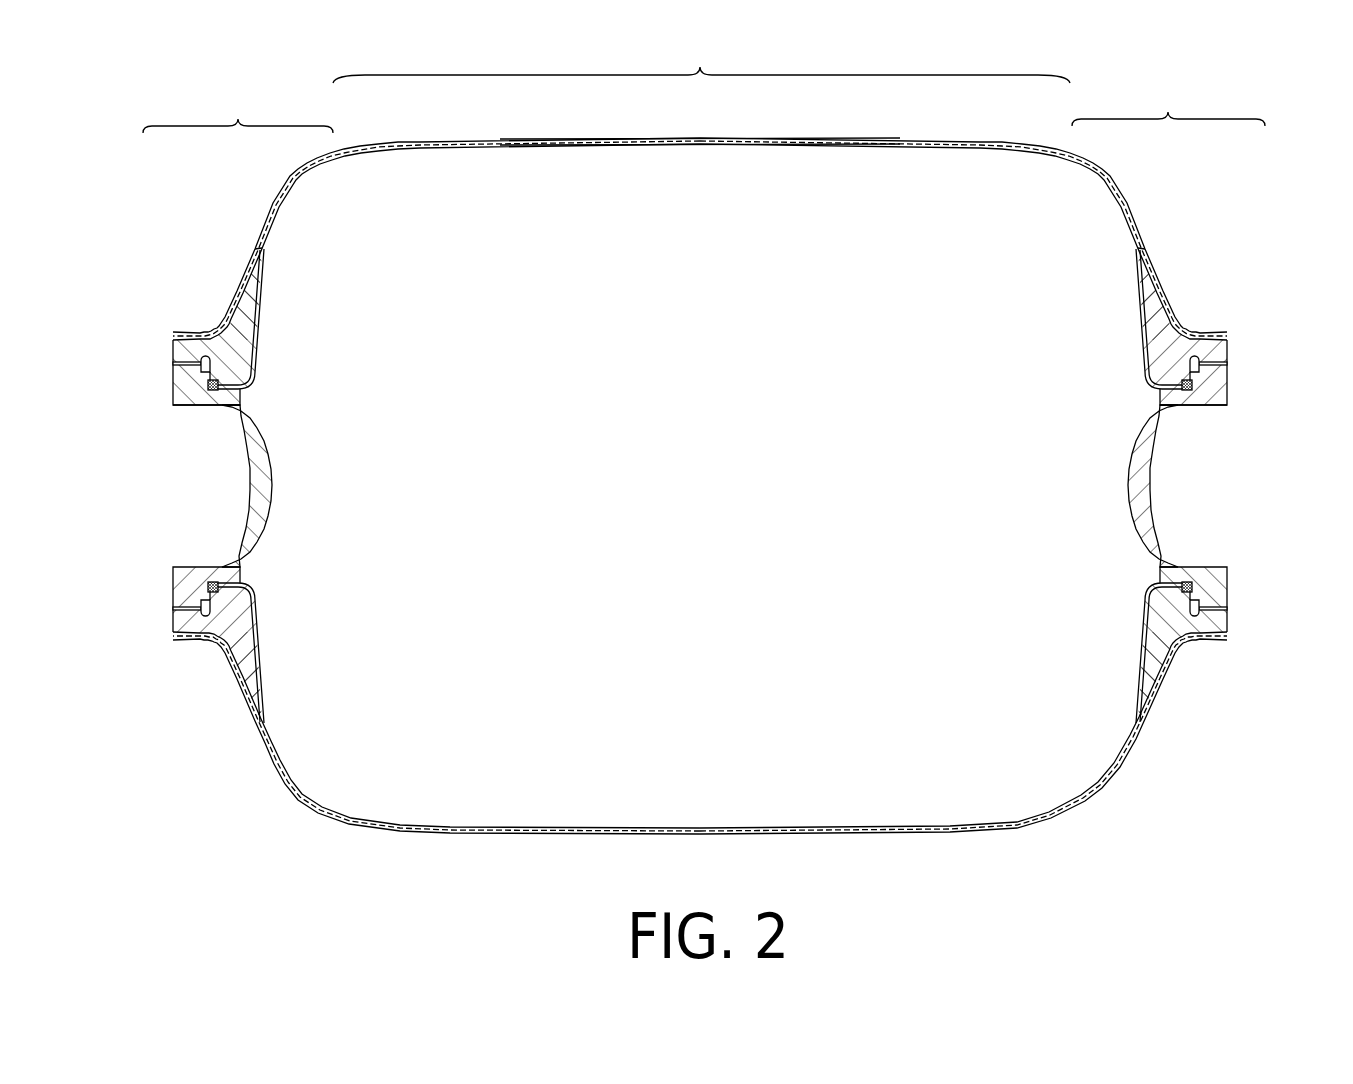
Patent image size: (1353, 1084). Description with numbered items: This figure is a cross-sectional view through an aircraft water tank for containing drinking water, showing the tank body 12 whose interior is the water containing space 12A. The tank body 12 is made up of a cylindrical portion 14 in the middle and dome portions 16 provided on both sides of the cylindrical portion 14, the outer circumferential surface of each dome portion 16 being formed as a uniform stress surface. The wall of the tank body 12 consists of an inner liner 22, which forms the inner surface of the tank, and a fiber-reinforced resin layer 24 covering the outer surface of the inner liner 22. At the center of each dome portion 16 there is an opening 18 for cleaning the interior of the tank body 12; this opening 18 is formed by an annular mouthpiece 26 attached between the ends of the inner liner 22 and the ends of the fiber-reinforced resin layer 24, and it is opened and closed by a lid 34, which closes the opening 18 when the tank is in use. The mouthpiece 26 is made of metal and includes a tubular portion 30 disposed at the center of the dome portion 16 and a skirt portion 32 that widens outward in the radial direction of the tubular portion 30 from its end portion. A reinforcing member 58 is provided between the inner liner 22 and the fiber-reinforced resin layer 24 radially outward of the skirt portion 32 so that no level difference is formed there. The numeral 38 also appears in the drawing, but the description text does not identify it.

The tank body 12 is at (1103, 806).
The water containing space 12A is at (733, 489).
The cylindrical portion 14 is at (701, 61).
The dome portion 16 is at (704, 108).
The opening 18 is at (173, 364).
The inner liner 22 is at (685, 146).
The fiber-reinforced resin layer 24 is at (685, 141).
The annular mouthpiece 26 is at (173, 347).
The tubular portion 30 is at (187, 377).
The skirt portion 32 is at (247, 305).
The lid 34 is at (250, 480).
The engagement portion 38 is at (234, 373).
The reinforcing member 58 is at (252, 258).